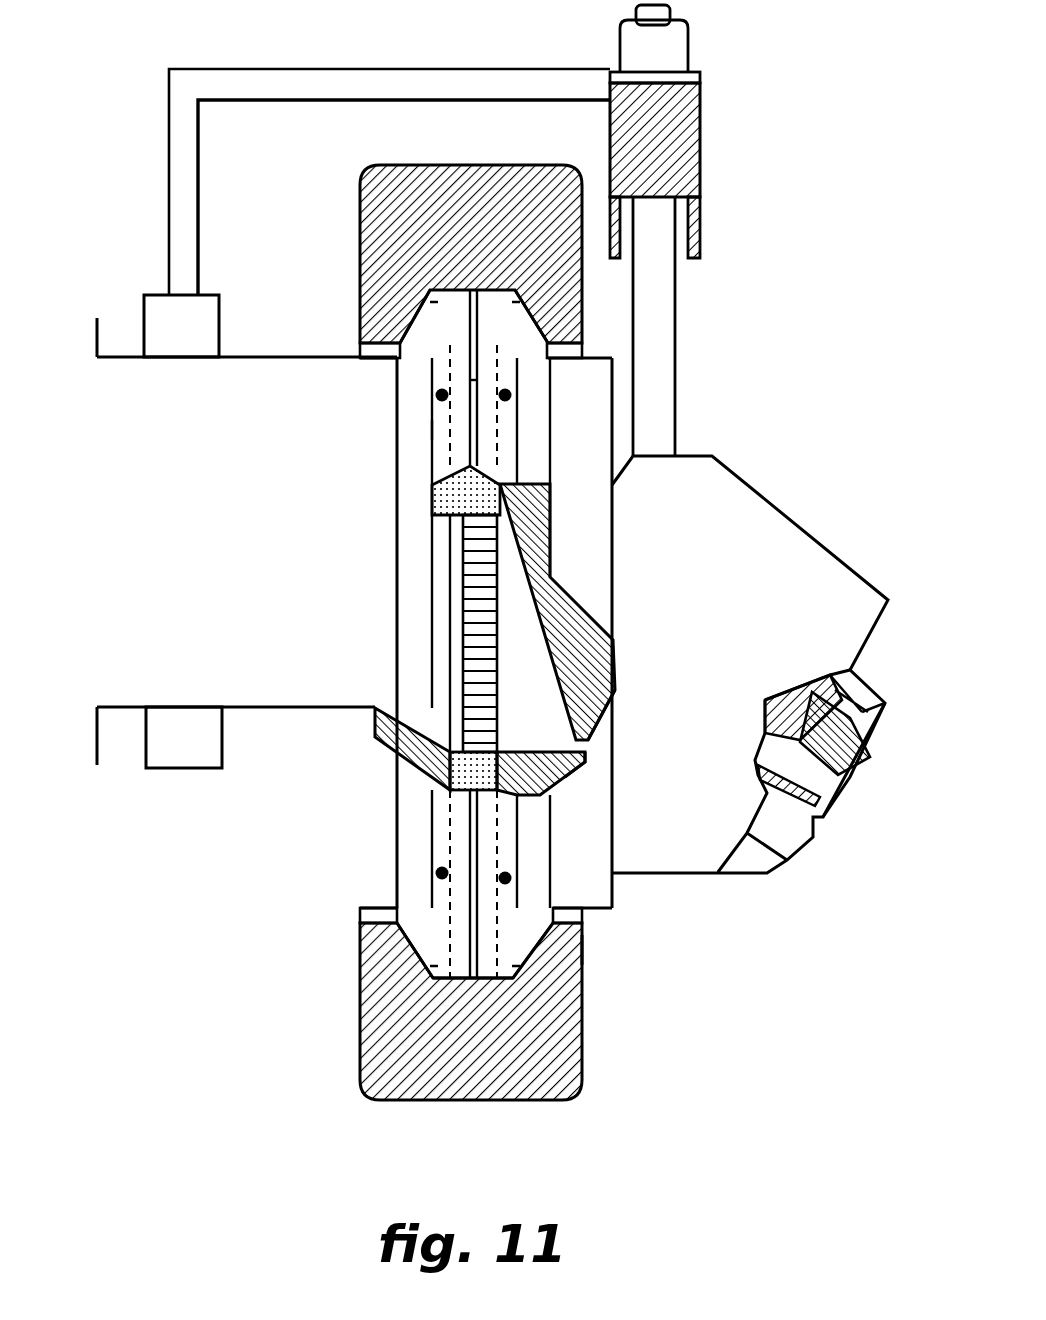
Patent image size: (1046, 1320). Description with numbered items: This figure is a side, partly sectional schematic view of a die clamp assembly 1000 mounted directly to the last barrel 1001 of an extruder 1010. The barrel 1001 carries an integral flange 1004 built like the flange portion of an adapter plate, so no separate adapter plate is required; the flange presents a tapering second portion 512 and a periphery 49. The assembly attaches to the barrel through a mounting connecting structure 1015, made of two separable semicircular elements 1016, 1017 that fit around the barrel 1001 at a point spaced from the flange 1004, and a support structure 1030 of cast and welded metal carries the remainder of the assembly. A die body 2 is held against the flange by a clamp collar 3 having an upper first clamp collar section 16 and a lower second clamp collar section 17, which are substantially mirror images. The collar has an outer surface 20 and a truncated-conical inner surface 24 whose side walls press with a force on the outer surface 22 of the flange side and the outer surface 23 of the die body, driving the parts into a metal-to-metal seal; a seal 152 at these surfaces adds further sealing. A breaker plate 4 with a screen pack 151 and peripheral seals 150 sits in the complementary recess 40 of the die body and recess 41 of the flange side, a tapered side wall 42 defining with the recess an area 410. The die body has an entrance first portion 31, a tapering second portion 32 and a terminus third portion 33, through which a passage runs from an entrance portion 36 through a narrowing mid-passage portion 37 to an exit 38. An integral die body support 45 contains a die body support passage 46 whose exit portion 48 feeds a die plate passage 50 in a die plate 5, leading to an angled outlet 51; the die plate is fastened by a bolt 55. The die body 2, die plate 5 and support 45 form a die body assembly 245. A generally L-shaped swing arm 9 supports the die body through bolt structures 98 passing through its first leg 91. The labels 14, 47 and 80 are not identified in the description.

The die body 2 is at (622, 910).
The clamp collar assembly 3 is at (452, 158).
The breaker plate 4 is at (508, 578).
The die plate 5 is at (818, 842).
The swing arm 9 is at (716, 163).
The passage 14 is at (478, 418).
The first clamp collar section 16 is at (405, 185).
The second clamp collar section 17 is at (456, 1100).
The outer surface 20 is at (487, 168).
The outer surface of the adapter plate 22 is at (397, 370).
The outer surface of the die body 23 is at (583, 953).
The inner surface 24 is at (445, 300).
The first portion 31 is at (515, 339).
The second portion 32 is at (551, 459).
The third portion 33 is at (603, 419).
The entrance portion 36 is at (556, 768).
The mid-passage portion 37 is at (539, 729).
The exit 38 is at (590, 765).
The recess 40 is at (500, 470).
The recess 41 is at (440, 425).
The tapered side wall 42 is at (463, 390).
The die body support 45 is at (728, 497).
The die body support passage 46 is at (852, 680).
The piston tip 47 is at (590, 745).
The exit portion 48 is at (765, 735).
The periphery 49 is at (462, 926).
The die plate passage 50 is at (750, 770).
The outlet 51 is at (855, 790).
The bolt 55 is at (878, 740).
The rod 80 is at (480, 400).
The first leg 91 is at (682, 118).
The bolt structures 98 is at (688, 35).
The peripheral seals 150 is at (508, 393).
The screen pack 151 is at (500, 635).
The seal 152 is at (432, 290).
The die body assembly 245 is at (775, 1052).
The area 410 is at (435, 805).
The second portion 512 is at (425, 783).
The die clamp assembly 1000 is at (285, 26).
The last barrel 1001 is at (245, 546).
The flange 1004 is at (412, 648).
The extruder 1010 is at (84, 339).
The mounting connecting structure 1015 is at (214, 344).
The semicircular element 1016 is at (145, 312).
The semicircular element 1017 is at (170, 770).
The support structure 1030 is at (330, 74).